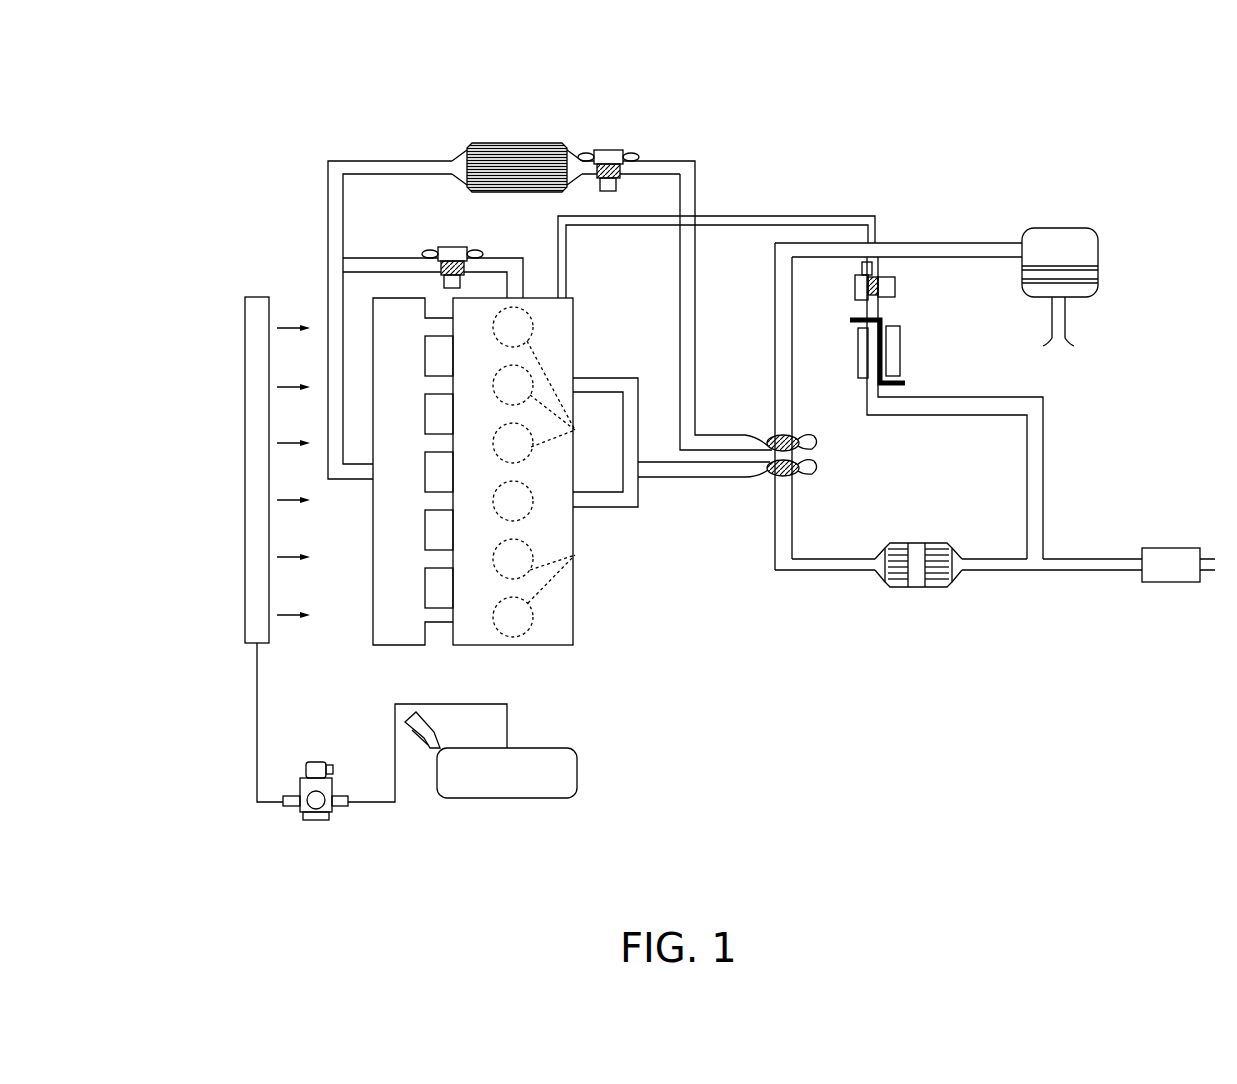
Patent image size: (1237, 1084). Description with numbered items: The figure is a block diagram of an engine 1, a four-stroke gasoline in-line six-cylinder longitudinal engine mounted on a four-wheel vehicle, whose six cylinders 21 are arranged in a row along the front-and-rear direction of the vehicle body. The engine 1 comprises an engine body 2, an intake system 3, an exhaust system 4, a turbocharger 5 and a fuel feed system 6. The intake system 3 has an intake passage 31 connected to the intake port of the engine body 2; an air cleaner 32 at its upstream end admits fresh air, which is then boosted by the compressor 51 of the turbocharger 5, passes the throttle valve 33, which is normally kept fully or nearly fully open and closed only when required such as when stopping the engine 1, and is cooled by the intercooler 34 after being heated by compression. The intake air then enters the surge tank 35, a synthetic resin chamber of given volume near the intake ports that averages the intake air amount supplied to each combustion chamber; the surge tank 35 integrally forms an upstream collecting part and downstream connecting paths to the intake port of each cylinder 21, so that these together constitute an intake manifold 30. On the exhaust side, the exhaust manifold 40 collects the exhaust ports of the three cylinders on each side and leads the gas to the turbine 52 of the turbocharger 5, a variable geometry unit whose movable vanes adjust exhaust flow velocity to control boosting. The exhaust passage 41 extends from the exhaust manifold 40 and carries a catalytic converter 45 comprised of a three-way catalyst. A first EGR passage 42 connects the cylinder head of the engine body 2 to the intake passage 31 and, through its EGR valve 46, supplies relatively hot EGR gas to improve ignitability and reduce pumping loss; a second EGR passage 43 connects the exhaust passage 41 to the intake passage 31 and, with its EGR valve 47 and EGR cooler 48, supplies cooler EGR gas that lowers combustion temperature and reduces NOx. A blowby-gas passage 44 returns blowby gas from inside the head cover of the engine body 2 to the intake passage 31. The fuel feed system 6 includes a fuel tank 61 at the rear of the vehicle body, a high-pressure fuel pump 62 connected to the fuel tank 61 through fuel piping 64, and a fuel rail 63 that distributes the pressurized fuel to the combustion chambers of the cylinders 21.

The engine 1 is at (952, 98).
The engine body 2 is at (575, 326).
The cylinders 21 is at (576, 430).
The intake system 3 is at (325, 201).
The intake manifold 30 is at (395, 492).
The intake passage 31 is at (700, 178).
The air cleaner 32 is at (1062, 228).
The throttle valve 33 is at (610, 146).
The intercooler 34 is at (506, 141).
The surge tank 35 is at (373, 613).
The exhaust system 4 is at (995, 415).
The exhaust manifold 40 is at (665, 480).
The exhaust passage 41 is at (985, 572).
The first EGR passage 42 is at (372, 258).
The second EGR passage 43 is at (1046, 460).
The blowby-gas passage 44 is at (805, 215).
The catalytic converter 45 is at (921, 543).
The EGR valve 46 is at (451, 246).
The EGR valve 47 is at (895, 283).
The EGR cooler 48 is at (893, 345).
The turbocharger 5 is at (832, 406).
The compressor 51 is at (790, 433).
The turbine 52 is at (795, 478).
The fuel feed system 6 is at (445, 762).
The fuel tank 61 is at (577, 750).
The high-pressure fuel pump 62 is at (298, 805).
The fuel rail 63 is at (245, 321).
The fuel piping 64 is at (508, 718).